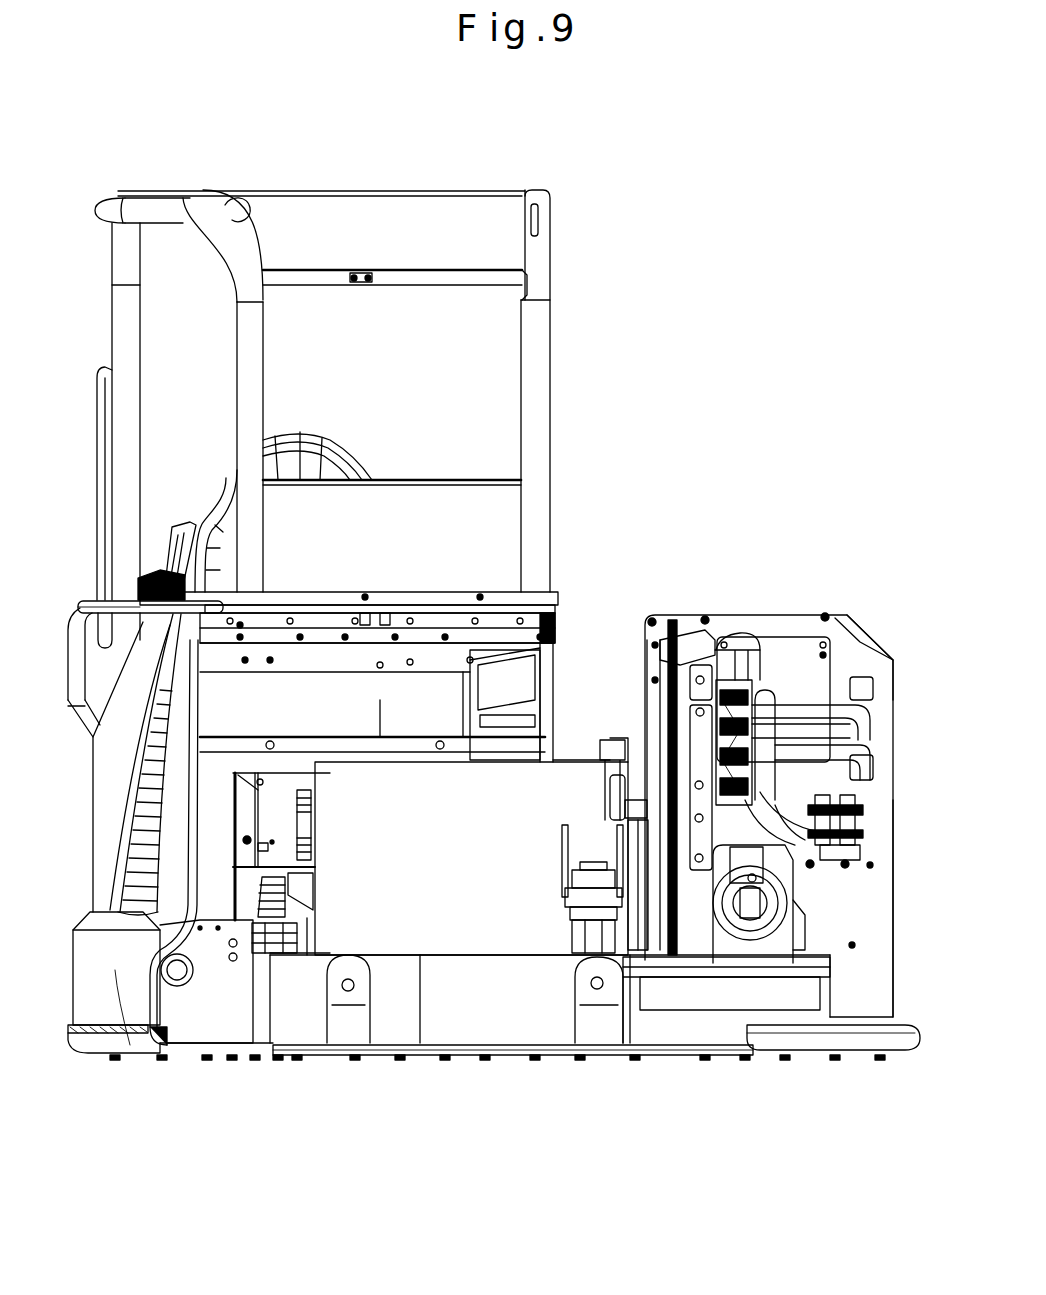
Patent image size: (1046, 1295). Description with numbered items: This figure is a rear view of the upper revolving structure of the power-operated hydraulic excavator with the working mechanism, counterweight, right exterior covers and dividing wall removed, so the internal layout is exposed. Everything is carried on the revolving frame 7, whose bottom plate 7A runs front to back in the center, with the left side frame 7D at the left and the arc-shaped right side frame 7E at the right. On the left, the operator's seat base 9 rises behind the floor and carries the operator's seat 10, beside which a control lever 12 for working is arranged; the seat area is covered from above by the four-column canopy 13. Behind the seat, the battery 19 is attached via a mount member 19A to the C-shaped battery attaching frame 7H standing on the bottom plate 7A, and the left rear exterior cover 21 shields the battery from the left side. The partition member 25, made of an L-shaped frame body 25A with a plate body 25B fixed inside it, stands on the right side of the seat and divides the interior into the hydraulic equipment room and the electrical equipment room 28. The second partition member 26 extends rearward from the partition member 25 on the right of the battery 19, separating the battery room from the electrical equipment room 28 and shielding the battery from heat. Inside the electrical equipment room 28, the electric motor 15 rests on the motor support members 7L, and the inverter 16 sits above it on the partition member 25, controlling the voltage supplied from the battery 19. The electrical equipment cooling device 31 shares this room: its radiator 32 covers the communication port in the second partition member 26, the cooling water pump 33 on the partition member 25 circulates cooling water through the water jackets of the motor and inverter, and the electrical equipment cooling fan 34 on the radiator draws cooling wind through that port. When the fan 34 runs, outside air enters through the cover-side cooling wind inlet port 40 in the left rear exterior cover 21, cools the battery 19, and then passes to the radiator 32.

The revolving frame 7 is at (320, 1058).
The bottom plate 7A is at (633, 1055).
The left side frame 7D is at (95, 1045).
The right side frame 7E is at (815, 1050).
The battery attaching frame 7H is at (440, 1000).
The motor support member 7L is at (708, 1012).
The operator's seat base 9 is at (413, 605).
The operator's seat 10 is at (315, 460).
The control lever for working 12 is at (186, 522).
The canopy 13 is at (388, 222).
The electric motor 15 is at (760, 965).
The inverter 16 is at (795, 660).
The battery 19 is at (410, 890).
The mount member 19A is at (258, 965).
The left rear exterior cover 21 is at (125, 970).
The partition member 25 is at (740, 612).
The frame body 25A is at (895, 662).
The plate body 25B is at (852, 898).
The second partition member 26 is at (665, 690).
The electrical equipment room 28 is at (853, 660).
The electrical equipment cooling device 31 is at (695, 655).
The radiator 32 is at (685, 745).
The cooling water pump 33 is at (866, 805).
The electrical equipment cooling fan 34 is at (762, 736).
The cover-side cooling wind inlet port for electrical equipment room 40 is at (130, 858).